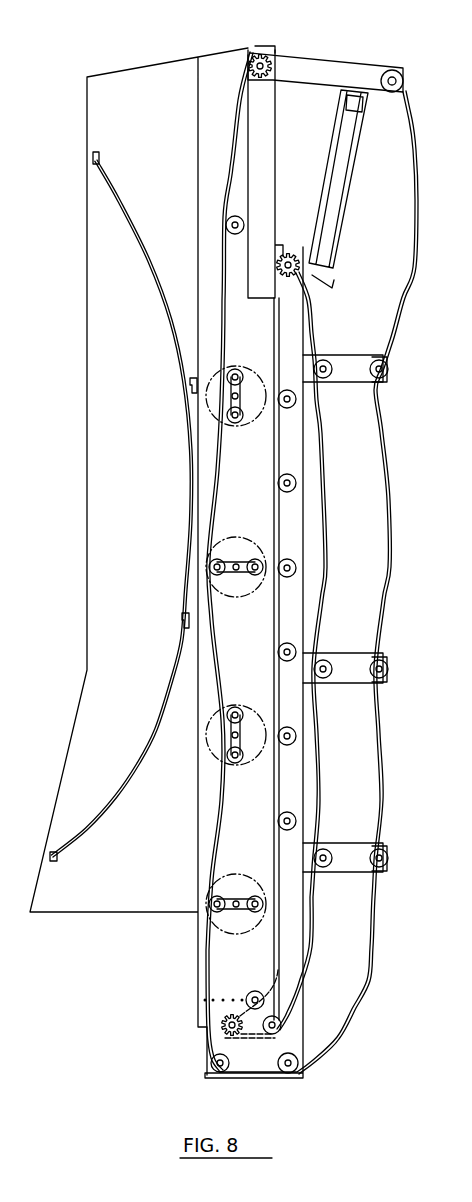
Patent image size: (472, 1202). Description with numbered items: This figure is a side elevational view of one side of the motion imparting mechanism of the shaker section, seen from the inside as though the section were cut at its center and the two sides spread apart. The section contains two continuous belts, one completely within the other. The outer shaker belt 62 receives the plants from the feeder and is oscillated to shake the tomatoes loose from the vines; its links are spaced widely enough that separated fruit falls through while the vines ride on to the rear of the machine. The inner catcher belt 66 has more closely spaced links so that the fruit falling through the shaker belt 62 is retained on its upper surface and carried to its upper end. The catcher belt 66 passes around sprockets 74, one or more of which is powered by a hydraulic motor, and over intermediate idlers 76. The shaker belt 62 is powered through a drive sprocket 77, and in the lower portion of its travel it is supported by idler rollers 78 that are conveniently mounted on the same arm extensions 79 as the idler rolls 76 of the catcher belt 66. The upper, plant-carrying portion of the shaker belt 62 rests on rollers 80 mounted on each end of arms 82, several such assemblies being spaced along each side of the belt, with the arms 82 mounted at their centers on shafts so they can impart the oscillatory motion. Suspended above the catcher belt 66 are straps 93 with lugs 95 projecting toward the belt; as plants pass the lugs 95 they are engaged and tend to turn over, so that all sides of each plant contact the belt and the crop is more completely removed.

The shaker belt 62 is at (367, 968).
The catcher belt 66 is at (322, 773).
The sprockets 74 is at (288, 254).
The intermediate idlers 76 is at (326, 863).
The drive sprocket 77 is at (266, 63).
The idler rollers 78 is at (389, 370).
The arm extensions 79 is at (353, 657).
The rollers 80 is at (216, 570).
The arms 82 is at (222, 550).
The straps 93 is at (140, 735).
The lugs 95 is at (186, 376).